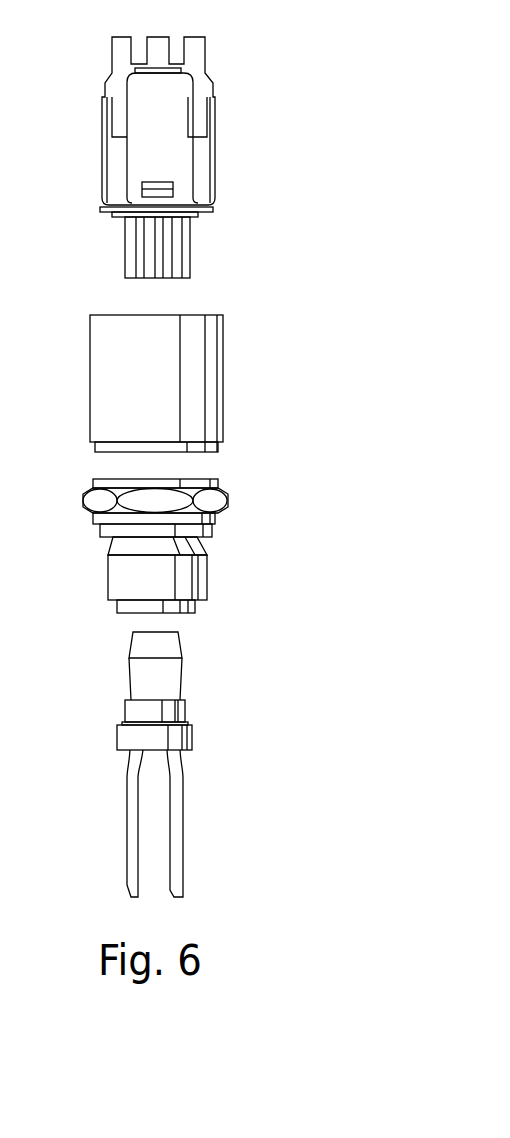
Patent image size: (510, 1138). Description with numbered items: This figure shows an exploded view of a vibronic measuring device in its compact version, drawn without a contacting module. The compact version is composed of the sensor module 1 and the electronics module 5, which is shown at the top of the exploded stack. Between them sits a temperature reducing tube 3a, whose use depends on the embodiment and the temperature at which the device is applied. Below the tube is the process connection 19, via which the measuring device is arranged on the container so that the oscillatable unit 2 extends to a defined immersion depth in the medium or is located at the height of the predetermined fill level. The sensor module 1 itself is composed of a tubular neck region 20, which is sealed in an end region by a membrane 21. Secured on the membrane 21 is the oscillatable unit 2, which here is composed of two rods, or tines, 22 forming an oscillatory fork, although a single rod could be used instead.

The sensor module 1 is at (105, 722).
The oscillatable unit 2 is at (158, 764).
The temperature reducing tube 3a is at (193, 367).
The electronics module 5 is at (228, 110).
The process connection 19 is at (210, 498).
The tubular neck region 20 is at (177, 742).
The membrane 21 is at (122, 753).
The rods 22 is at (180, 802).